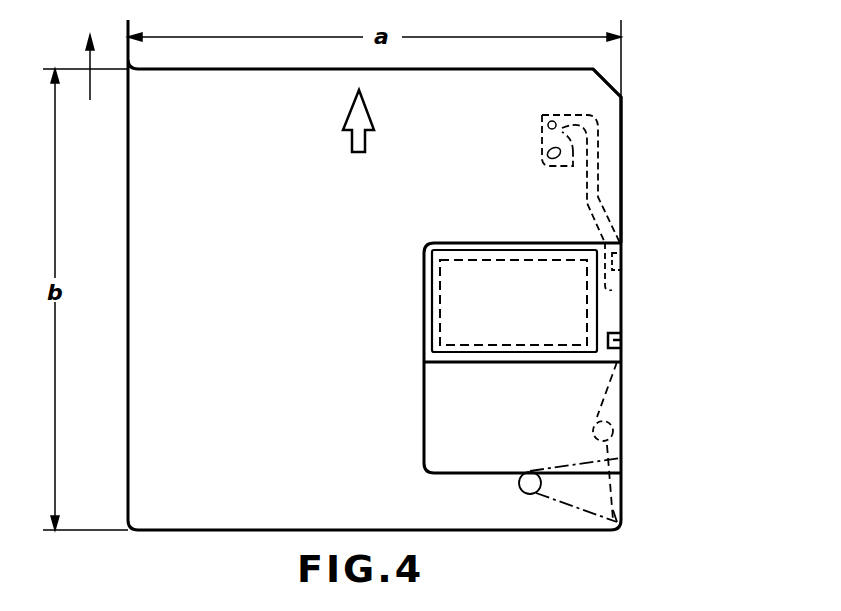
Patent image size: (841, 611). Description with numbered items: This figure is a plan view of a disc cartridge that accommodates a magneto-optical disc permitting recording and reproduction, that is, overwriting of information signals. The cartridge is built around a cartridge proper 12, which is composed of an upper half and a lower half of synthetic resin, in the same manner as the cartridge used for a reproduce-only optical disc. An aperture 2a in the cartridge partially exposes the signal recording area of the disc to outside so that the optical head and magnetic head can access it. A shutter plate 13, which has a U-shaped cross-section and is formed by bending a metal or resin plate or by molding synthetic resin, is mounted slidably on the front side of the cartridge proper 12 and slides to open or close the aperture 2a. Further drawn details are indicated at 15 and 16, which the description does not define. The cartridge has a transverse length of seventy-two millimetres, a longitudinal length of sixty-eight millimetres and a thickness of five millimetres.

The cartridge proper 12 is at (628, 158).
The shutter plate 13 is at (608, 312).
The aperture 2a is at (486, 333).
The latch mechanism 15 is at (605, 203).
The pivot lever 16 is at (620, 493).